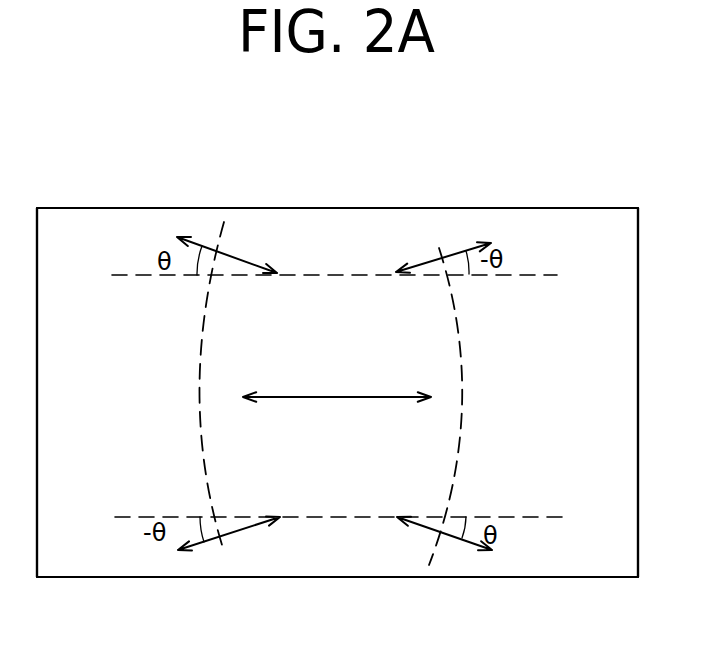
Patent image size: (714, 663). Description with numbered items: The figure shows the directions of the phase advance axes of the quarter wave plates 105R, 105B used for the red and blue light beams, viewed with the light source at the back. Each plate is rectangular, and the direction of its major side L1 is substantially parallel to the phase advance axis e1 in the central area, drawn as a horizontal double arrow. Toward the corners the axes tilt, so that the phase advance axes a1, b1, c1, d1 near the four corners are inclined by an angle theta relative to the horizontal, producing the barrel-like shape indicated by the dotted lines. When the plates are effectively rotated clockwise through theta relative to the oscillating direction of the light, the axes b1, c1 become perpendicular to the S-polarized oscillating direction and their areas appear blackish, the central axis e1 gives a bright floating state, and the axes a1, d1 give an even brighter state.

The quarter wave plate for the B-light beam 105B is at (513, 208).
The quarter wave plate for the R-light beam 105R is at (337, 392).
The phase advance axis a1 is at (233, 256).
The phase advance axis b1 is at (452, 252).
The phase advance axis c1 is at (236, 532).
The phase advance axis d1 is at (434, 528).
The phase advance axis in the central area e1 is at (332, 396).
The major side of the rectangle L1 is at (457, 579).